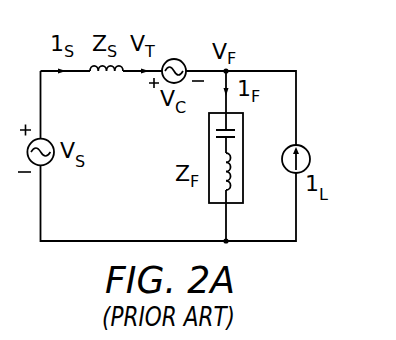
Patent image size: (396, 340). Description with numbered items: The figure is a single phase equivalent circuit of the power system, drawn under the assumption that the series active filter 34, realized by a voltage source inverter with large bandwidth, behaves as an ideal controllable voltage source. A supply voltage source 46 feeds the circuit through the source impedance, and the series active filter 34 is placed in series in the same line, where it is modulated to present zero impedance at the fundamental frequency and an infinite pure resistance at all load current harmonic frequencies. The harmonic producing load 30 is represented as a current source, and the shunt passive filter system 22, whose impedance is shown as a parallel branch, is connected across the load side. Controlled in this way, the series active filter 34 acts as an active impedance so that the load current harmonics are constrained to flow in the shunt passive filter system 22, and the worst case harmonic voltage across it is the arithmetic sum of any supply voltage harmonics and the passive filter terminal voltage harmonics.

The series active filter 34 is at (174, 59).
The AC voltage source 46 is at (45, 139).
The harmonic producing load 30 is at (307, 148).
The shunt passive filter system 22 is at (233, 203).